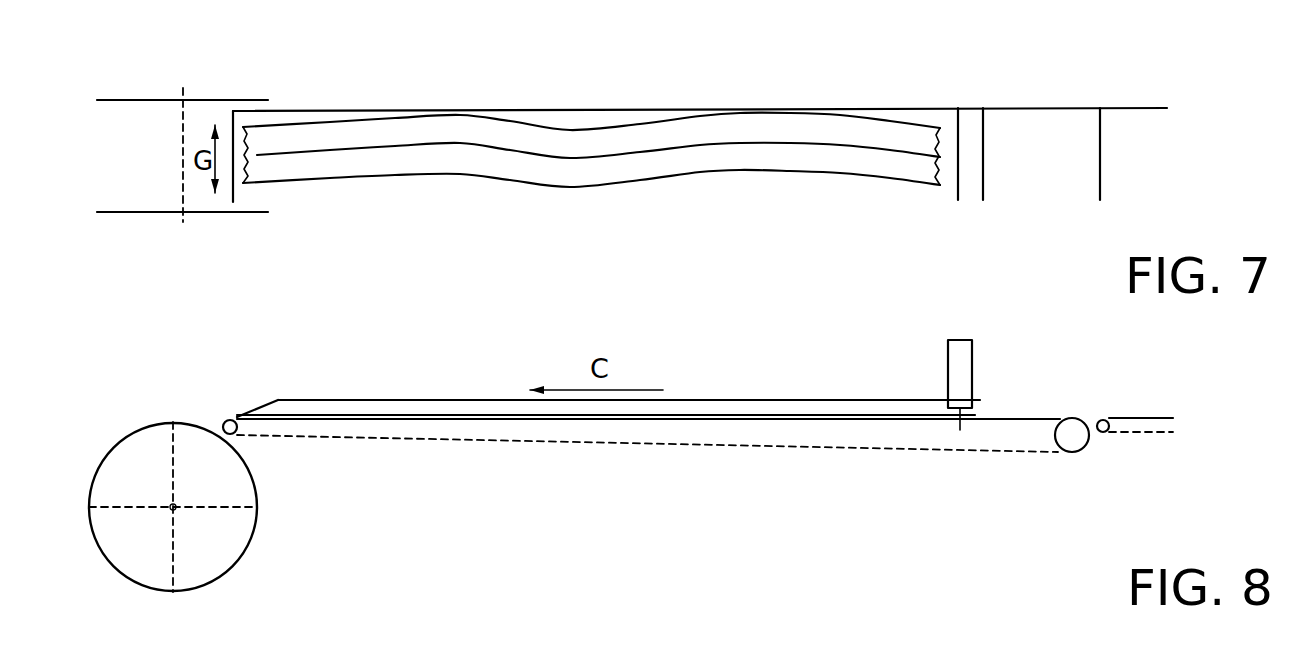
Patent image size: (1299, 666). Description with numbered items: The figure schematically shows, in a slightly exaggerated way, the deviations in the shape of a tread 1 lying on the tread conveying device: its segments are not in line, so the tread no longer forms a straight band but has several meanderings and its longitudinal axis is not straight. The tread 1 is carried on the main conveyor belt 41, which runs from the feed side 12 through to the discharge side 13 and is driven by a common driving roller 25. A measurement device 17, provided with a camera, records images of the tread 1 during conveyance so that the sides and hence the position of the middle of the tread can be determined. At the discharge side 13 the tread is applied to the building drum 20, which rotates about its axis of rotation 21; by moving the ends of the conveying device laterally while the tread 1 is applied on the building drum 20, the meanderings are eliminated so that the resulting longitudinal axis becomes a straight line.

In FIG. 7, the tread 1 is at (395, 132).
In FIG. 8, the tread 1 is at (428, 408).
In FIG. 7, the feed side 12 is at (1068, 93).
In FIG. 8, the feed side 12 is at (1067, 385).
In FIG. 7, the discharge side 13 is at (245, 93).
In FIG. 8, the discharge side 13 is at (227, 395).
In FIG. 7, the camera 17 is at (970, 125).
In FIG. 8, the camera 17 is at (958, 352).
In FIG. 7, the building drum 20 is at (115, 123).
In FIG. 8, the building drum 20 is at (112, 468).
In FIG. 8, the axis of rotation 21 is at (176, 508).
In FIG. 8, the common driving roller 25 is at (1073, 440).
In FIG. 8, the main conveyor belt 41 is at (553, 422).